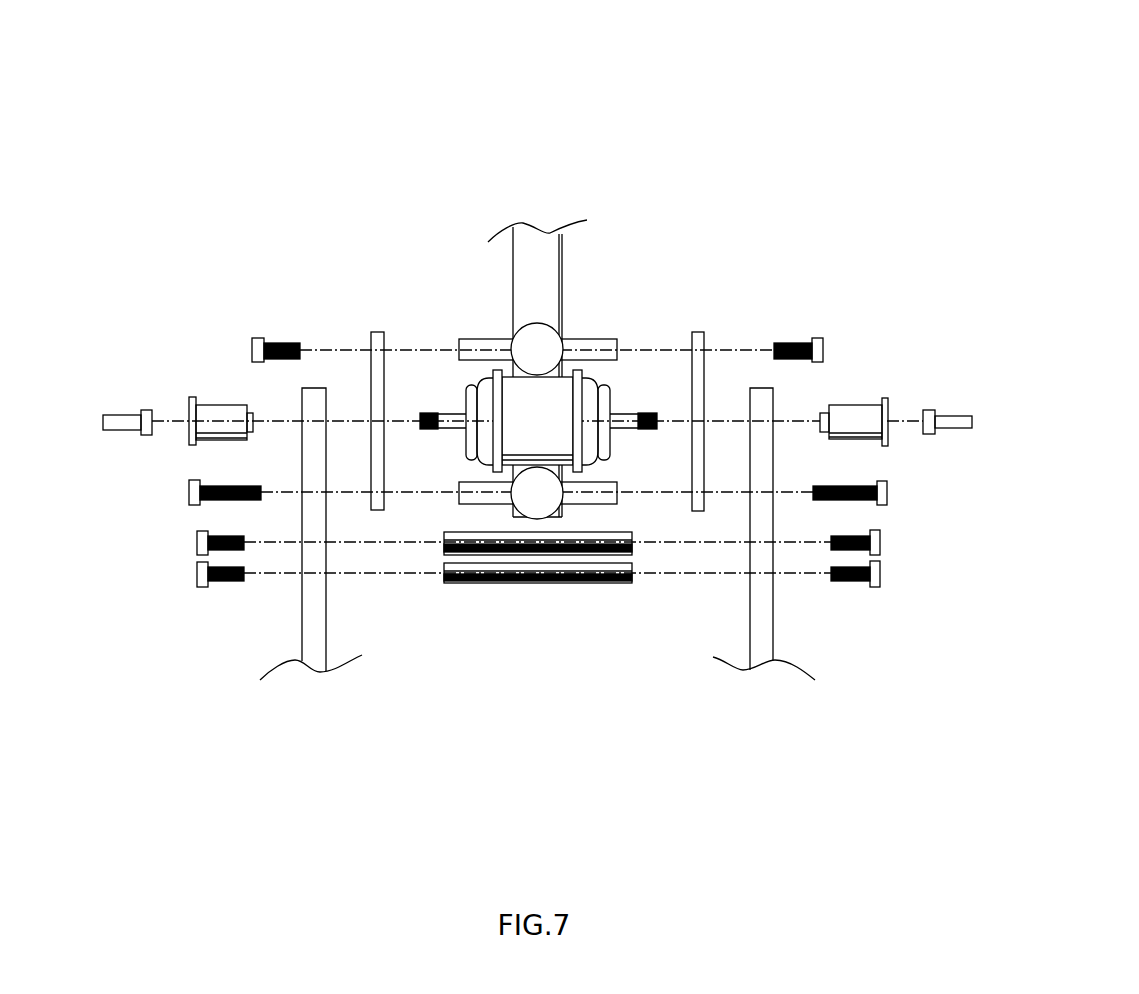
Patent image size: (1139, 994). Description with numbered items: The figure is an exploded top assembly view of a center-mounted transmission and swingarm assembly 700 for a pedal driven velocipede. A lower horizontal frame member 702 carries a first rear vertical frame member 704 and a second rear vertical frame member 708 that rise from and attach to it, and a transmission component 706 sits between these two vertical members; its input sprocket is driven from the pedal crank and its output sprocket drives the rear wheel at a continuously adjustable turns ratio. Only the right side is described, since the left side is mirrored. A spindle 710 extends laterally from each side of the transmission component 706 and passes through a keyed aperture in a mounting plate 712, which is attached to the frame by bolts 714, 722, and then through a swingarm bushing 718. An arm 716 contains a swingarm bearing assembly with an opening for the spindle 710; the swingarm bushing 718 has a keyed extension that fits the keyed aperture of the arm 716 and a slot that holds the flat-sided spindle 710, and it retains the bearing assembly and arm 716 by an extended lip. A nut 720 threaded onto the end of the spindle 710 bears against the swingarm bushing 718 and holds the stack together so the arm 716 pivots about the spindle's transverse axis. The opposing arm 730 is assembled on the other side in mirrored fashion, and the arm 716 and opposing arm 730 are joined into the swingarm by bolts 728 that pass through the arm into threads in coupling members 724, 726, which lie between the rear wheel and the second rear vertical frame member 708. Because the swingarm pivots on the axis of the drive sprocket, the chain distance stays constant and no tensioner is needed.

The center-mounted transmission and swingarm assembly 700 is at (848, 45).
The lower horizontal frame member 702 is at (562, 287).
The first rear vertical frame member 704 is at (515, 330).
The transmission component 706 is at (562, 437).
The second rear vertical frame member 708 is at (565, 506).
The spindle 710 is at (623, 410).
The mounting plate 712 is at (700, 332).
The bolt 714 is at (813, 342).
The arm 716 is at (774, 463).
The swingarm bushing 718 is at (855, 402).
The nut 720 is at (963, 410).
The bolt 722 is at (887, 493).
The coupling member 724 is at (443, 548).
The coupling member 726 is at (603, 585).
The bolts 728 is at (880, 540).
The opposing arm 730 is at (301, 523).